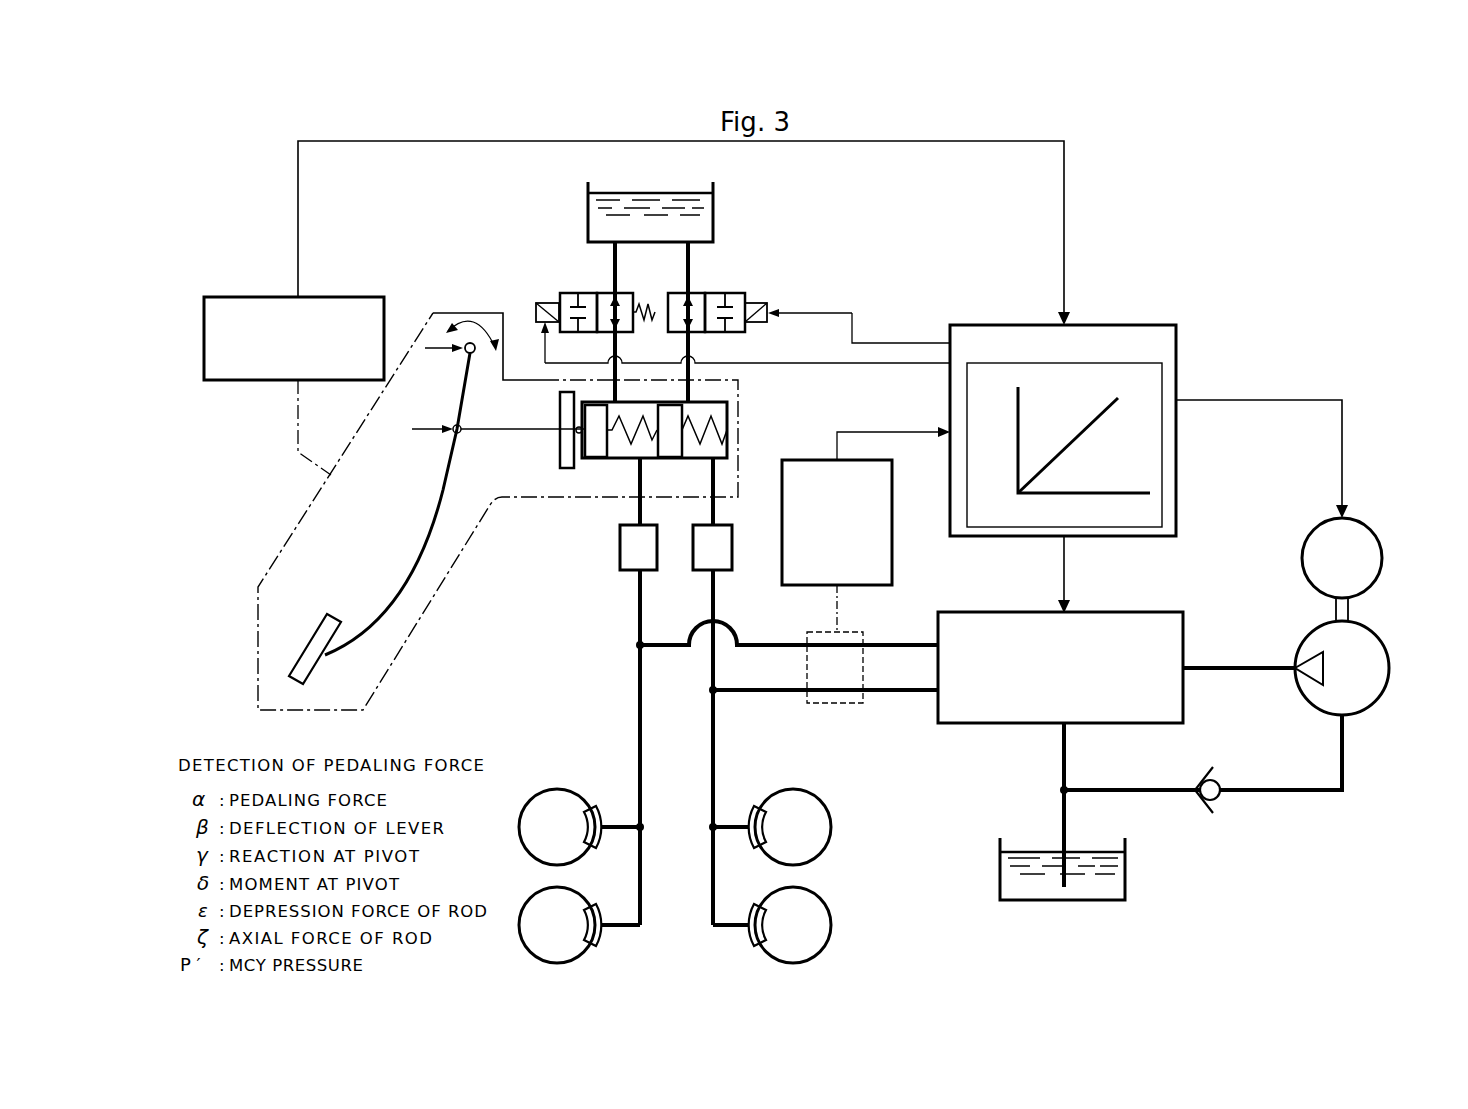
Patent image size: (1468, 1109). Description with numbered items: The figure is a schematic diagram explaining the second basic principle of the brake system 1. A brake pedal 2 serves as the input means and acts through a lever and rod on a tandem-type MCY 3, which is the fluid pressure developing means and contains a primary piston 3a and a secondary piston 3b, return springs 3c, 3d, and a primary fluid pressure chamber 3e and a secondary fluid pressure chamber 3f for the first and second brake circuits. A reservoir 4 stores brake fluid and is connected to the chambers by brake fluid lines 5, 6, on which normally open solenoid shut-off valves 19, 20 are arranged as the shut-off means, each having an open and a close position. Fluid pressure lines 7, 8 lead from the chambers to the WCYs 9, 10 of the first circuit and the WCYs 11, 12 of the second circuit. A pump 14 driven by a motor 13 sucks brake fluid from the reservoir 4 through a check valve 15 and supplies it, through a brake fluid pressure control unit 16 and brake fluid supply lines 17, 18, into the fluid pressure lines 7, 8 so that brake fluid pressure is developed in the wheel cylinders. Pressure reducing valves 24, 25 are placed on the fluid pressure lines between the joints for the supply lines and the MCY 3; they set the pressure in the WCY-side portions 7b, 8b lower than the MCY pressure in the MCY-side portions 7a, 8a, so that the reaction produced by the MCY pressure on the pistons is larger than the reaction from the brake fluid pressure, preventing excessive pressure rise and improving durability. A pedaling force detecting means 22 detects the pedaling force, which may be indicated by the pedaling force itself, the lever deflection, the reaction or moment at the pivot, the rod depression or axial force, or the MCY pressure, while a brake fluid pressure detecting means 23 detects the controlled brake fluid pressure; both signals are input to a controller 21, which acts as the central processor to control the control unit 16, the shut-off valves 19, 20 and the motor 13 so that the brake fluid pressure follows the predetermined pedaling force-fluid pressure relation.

The brake system 1 is at (1242, 264).
The brake pedal 2 is at (318, 668).
The tandem-type MCY 3 is at (622, 457).
The primary piston 3a is at (598, 447).
The secondary piston 3b is at (673, 428).
The return spring 3c is at (627, 440).
The return spring 3d is at (713, 446).
The primary fluid pressure chamber 3e is at (622, 415).
The secondary fluid pressure chamber 3f is at (705, 413).
The reservoir 4 is at (717, 213).
The brake fluid line 5 is at (618, 268).
The brake fluid line 6 is at (691, 270).
The fluid pressure line 7 is at (649, 691).
The MCY-side portion 7a is at (772, 513).
The WCY-side portion 7b is at (637, 615).
The fluid pressure line 8 is at (767, 691).
The MCY-side portion 8a is at (772, 513).
The WCY-side portion 8b is at (716, 735).
The WCY 9 is at (598, 816).
The WCY 10 is at (596, 908).
The WCY 11 is at (751, 816).
The WCY 12 is at (750, 910).
The motor 13 is at (1375, 530).
The pump 14 is at (1378, 638).
The check valve 15 is at (1220, 800).
The brake fluid pressure control unit 16 is at (1140, 612).
The brake fluid supply line 17 is at (909, 641).
The brake fluid supply line 18 is at (893, 697).
The solenoid shut-off valve 19 is at (573, 293).
The solenoid shut-off valve 20 is at (737, 295).
The controller 21 is at (1180, 352).
The pedaling force detecting means 22 is at (327, 297).
The brake fluid pressure detecting means 23 is at (893, 538).
The pressure reducing valve 24 is at (645, 572).
The pressure reducing valve 25 is at (719, 572).